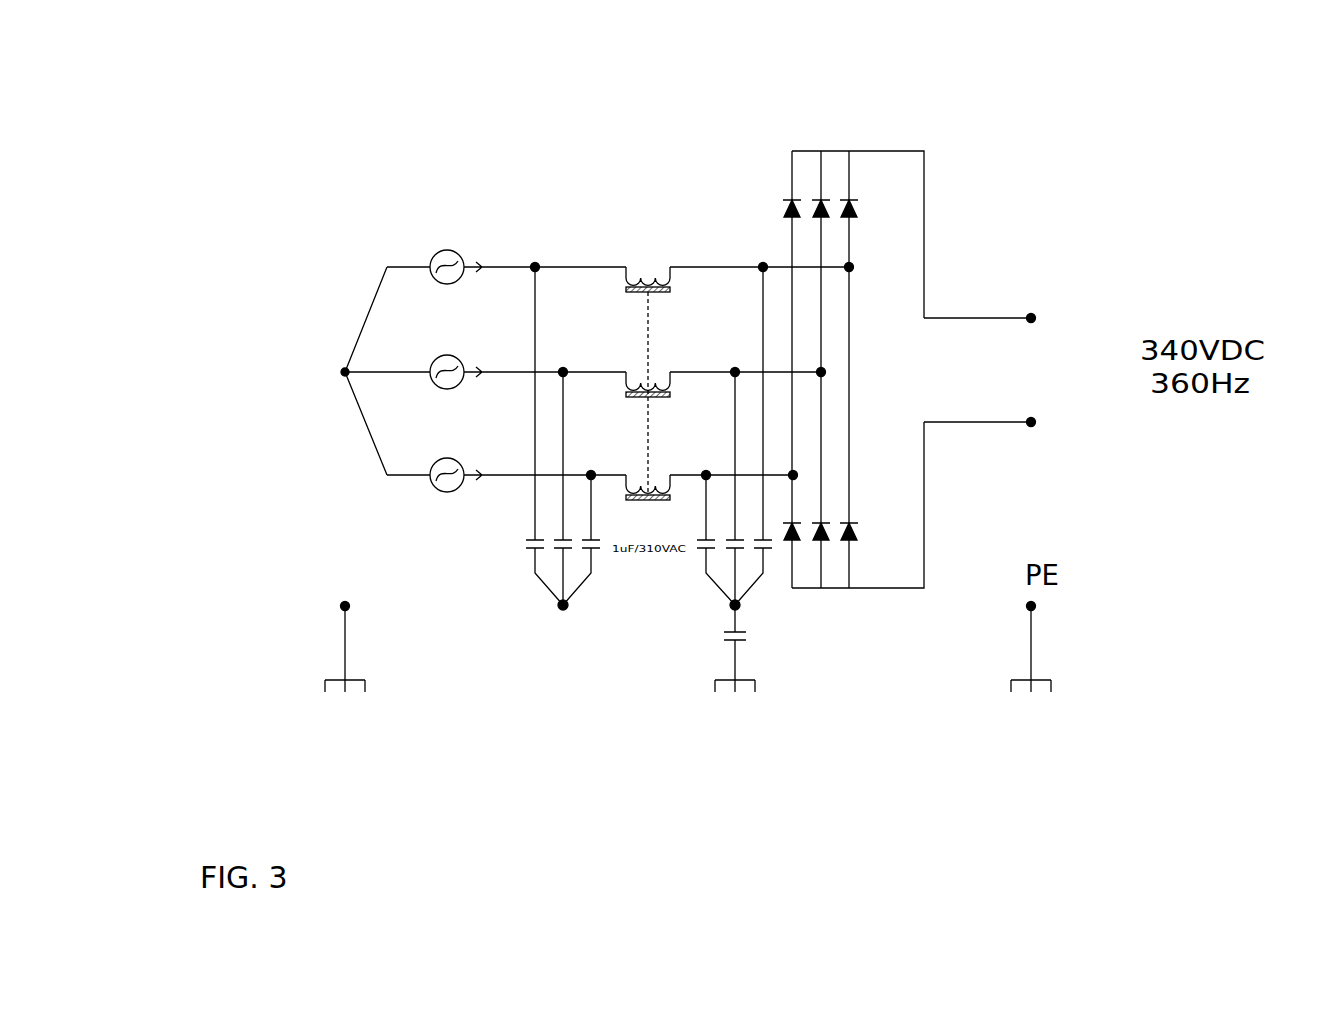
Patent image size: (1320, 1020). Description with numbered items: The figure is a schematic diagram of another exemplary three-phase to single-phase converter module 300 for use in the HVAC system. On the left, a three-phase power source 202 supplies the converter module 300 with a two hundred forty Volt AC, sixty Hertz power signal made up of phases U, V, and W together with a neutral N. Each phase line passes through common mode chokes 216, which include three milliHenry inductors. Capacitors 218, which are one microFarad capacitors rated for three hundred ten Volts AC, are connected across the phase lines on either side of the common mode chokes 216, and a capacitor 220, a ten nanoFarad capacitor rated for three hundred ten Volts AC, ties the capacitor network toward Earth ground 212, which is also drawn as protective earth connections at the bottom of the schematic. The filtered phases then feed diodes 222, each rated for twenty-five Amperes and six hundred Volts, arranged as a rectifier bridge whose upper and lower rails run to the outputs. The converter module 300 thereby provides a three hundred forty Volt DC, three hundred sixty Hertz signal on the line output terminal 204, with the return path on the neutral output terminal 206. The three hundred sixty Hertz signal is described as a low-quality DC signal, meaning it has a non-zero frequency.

The three-phase to single-phase converter module 300 is at (275, 157).
The three-phase power source 202 is at (412, 226).
The line output terminal 204 is at (1030, 310).
The neutral output terminal 206 is at (1031, 430).
The Earth ground 212 is at (366, 693).
The common mode chokes 216 is at (625, 279).
The capacitors 218 is at (530, 549).
The capacitor 220 is at (752, 640).
The diodes 222 is at (851, 199).